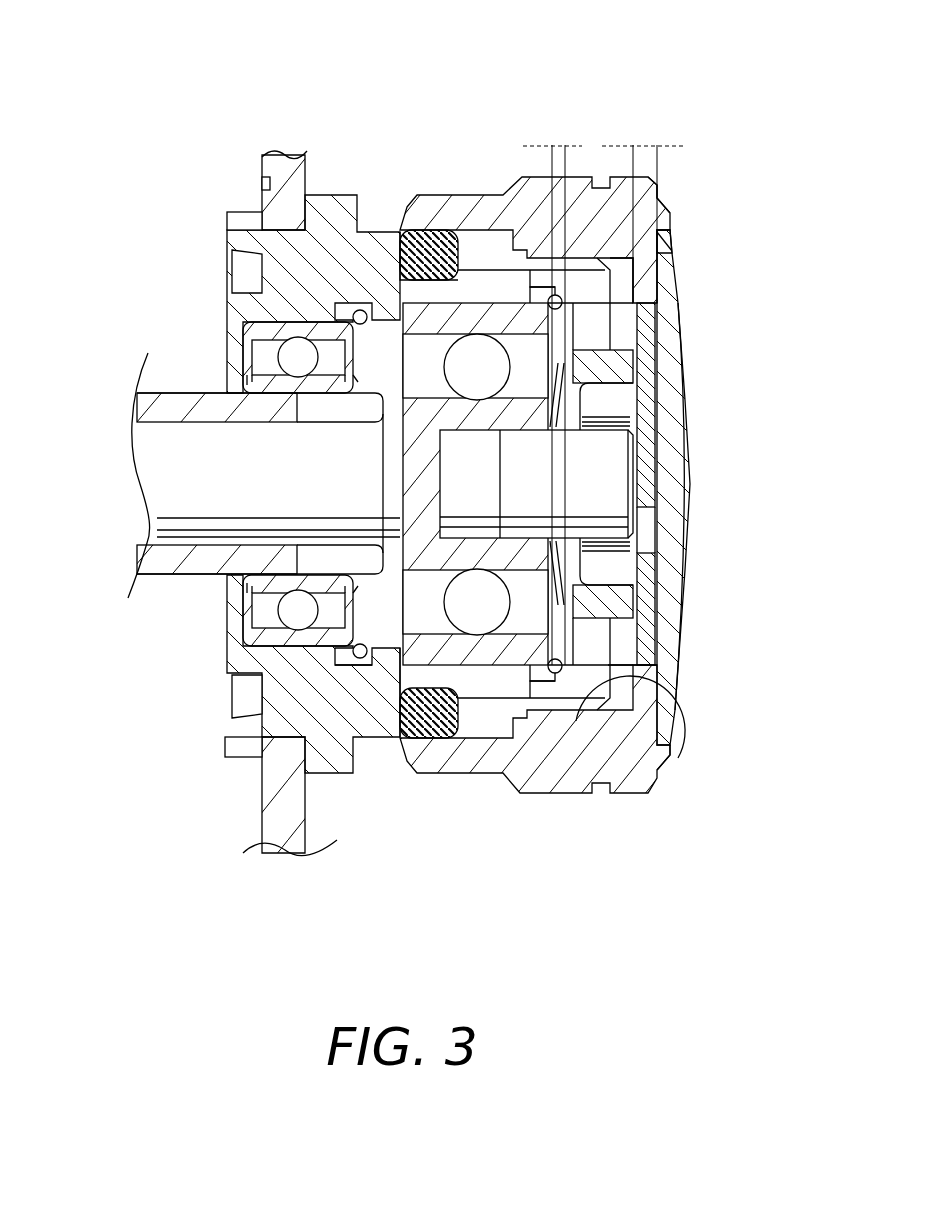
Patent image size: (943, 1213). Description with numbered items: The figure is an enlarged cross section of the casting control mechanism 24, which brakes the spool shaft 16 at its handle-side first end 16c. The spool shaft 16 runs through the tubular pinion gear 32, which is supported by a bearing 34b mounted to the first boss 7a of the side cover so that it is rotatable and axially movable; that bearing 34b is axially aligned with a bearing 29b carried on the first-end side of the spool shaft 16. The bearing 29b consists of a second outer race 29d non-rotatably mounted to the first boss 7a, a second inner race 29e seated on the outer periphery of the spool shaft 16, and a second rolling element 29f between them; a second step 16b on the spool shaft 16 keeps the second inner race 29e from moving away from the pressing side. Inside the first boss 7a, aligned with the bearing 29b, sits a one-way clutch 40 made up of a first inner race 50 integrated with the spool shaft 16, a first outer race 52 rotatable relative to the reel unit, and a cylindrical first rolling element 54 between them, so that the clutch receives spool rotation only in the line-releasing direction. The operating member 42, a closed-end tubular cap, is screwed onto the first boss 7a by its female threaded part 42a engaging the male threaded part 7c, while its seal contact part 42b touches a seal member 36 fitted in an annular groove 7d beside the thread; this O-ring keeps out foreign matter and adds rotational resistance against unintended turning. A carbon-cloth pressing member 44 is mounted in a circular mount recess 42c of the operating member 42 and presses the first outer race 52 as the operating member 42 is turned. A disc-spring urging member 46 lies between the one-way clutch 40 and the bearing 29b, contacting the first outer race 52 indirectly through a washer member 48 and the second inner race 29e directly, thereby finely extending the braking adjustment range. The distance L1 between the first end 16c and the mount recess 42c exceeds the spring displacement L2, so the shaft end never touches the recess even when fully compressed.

The operating member 42 is at (628, 806).
The spool shaft 16 is at (318, 652).
The bearing 34b is at (248, 322).
The pinion gear 32 is at (182, 392).
The second inner race 29e is at (398, 522).
The bearing 29b is at (398, 300).
The second rolling element 29f is at (477, 367).
The second outer race 29d is at (483, 652).
The first end 16c is at (638, 520).
The seal member 36 is at (458, 205).
The annular groove 7d is at (432, 230).
The seal contact part 42b is at (448, 738).
The first boss 7a is at (470, 205).
The male threaded part 7c is at (530, 720).
The displacement of the urging member L2 is at (552, 383).
The distance between first end and mount recess L1 is at (643, 203).
The first inner race 50 is at (605, 372).
The first rolling element 54 is at (620, 566).
The pressing member 44 is at (650, 432).
The casting control mechanism 24 is at (655, 300).
The one-way clutch 40 is at (660, 298).
The washer member 48 is at (667, 212).
The mount recess 42c is at (690, 457).
The female threaded part 42a is at (676, 700).
The first outer race 52 is at (645, 688).
The urging member 46 is at (562, 692).
The second step 16b is at (405, 682).